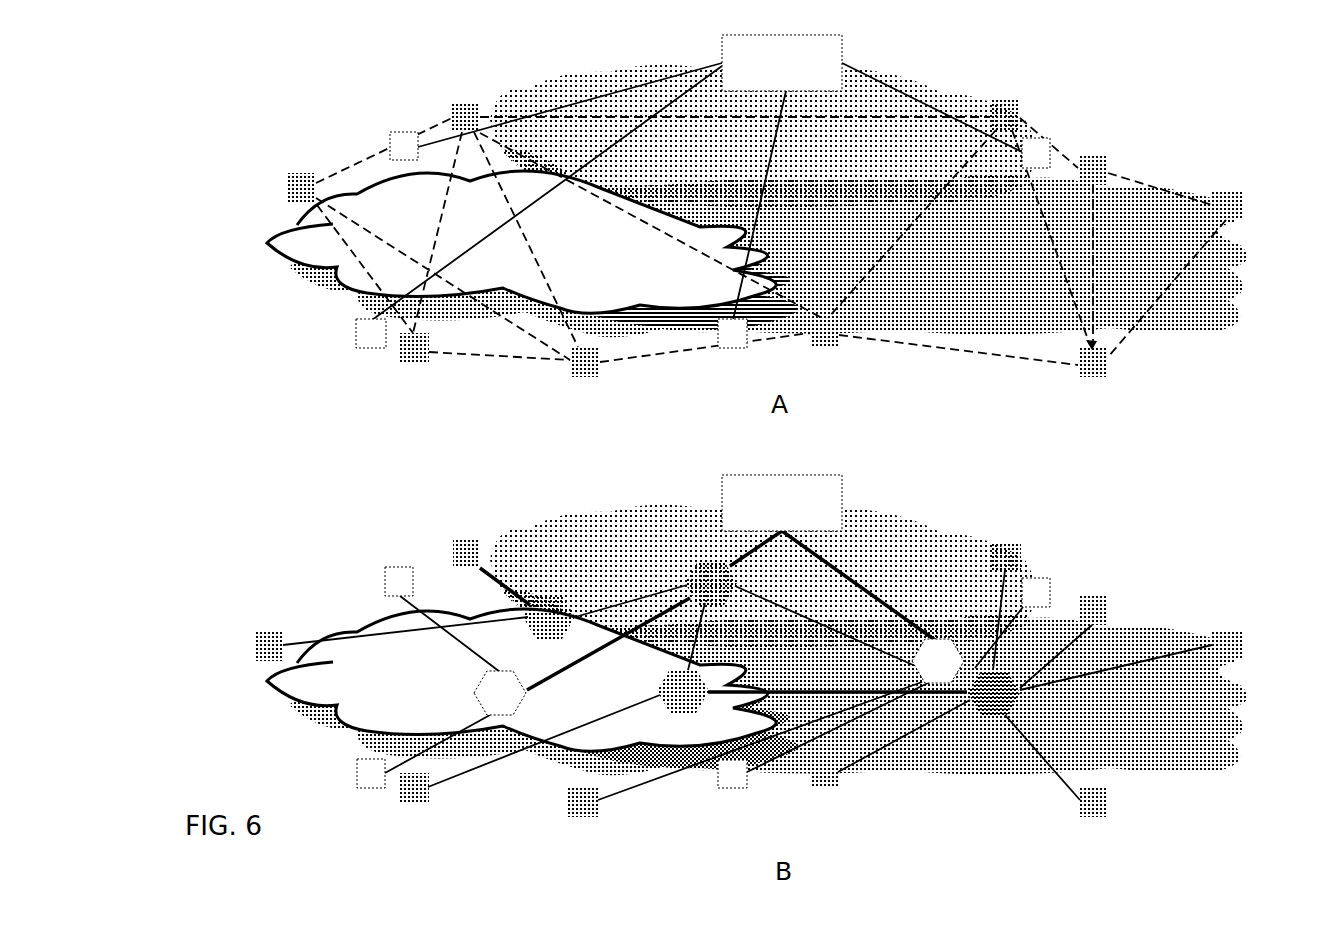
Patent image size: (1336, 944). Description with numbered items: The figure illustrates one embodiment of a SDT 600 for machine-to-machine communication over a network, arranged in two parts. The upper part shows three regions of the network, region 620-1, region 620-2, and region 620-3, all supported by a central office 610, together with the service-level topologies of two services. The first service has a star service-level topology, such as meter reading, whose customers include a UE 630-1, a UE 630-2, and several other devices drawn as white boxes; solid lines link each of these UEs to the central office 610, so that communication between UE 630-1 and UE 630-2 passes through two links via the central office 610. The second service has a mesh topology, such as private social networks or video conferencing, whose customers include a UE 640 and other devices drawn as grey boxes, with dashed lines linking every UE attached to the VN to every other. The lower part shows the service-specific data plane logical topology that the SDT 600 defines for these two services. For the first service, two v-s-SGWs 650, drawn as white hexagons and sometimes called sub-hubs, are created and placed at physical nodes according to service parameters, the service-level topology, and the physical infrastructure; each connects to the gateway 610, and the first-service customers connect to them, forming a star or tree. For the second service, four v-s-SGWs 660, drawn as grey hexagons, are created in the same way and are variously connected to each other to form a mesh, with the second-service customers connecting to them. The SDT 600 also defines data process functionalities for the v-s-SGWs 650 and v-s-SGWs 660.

The SDT 600 is at (251, 90).
The central office 610 is at (768, 89).
The region 620-1 is at (545, 90).
The region 620-2 is at (267, 243).
The region 620-3 is at (1232, 317).
The UE 630-1 is at (390, 148).
The UE 630-2 is at (747, 333).
The UE 640 is at (452, 107).
The v-s-SGWs 650 is at (472, 694).
The v-s-SGWs 660 is at (550, 641).